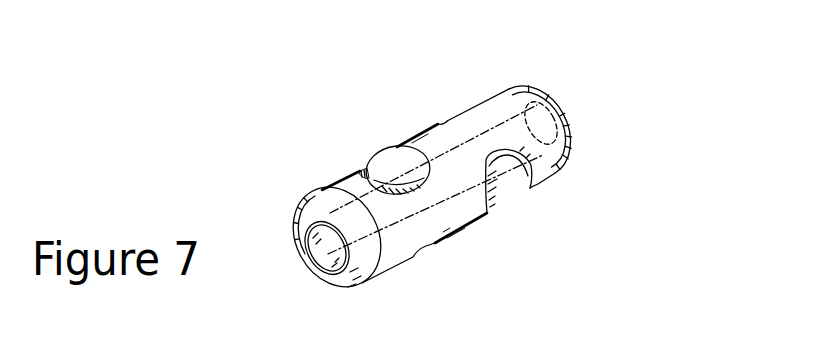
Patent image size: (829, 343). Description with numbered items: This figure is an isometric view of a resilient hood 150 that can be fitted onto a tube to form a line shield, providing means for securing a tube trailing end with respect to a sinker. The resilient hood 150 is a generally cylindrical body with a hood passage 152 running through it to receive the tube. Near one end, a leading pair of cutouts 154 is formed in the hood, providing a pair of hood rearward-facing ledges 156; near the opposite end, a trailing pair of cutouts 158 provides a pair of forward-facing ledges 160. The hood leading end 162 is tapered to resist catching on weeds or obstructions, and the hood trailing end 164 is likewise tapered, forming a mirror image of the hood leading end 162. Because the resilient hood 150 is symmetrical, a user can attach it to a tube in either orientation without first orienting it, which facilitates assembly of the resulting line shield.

The resilient hood 150 is at (610, 110).
The hood passage 152 is at (326, 250).
The leading pair of cutouts 154 is at (456, 116).
The hood rearward-facing ledges 156 is at (530, 182).
The trailing pair of cutouts 158 is at (392, 163).
The forward-facing ledges 160 is at (371, 172).
The hood leading end 162 is at (538, 87).
The hood trailing end 164 is at (306, 205).